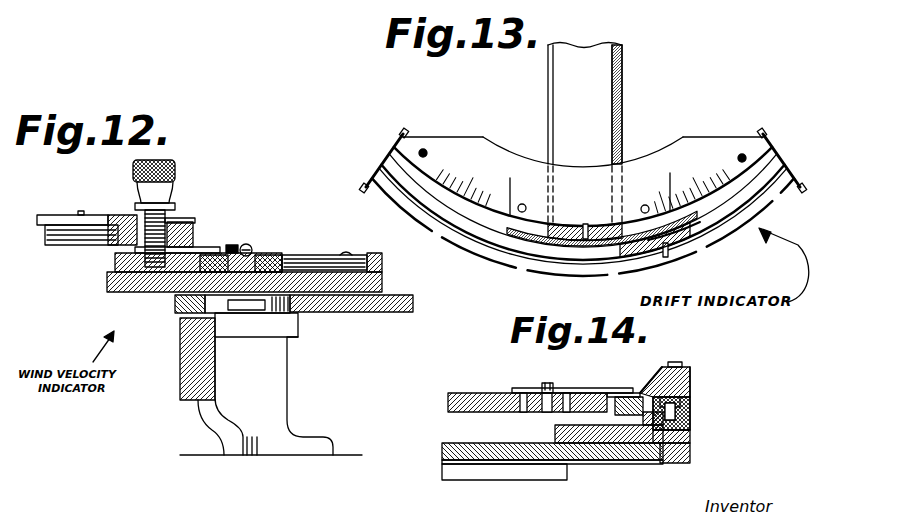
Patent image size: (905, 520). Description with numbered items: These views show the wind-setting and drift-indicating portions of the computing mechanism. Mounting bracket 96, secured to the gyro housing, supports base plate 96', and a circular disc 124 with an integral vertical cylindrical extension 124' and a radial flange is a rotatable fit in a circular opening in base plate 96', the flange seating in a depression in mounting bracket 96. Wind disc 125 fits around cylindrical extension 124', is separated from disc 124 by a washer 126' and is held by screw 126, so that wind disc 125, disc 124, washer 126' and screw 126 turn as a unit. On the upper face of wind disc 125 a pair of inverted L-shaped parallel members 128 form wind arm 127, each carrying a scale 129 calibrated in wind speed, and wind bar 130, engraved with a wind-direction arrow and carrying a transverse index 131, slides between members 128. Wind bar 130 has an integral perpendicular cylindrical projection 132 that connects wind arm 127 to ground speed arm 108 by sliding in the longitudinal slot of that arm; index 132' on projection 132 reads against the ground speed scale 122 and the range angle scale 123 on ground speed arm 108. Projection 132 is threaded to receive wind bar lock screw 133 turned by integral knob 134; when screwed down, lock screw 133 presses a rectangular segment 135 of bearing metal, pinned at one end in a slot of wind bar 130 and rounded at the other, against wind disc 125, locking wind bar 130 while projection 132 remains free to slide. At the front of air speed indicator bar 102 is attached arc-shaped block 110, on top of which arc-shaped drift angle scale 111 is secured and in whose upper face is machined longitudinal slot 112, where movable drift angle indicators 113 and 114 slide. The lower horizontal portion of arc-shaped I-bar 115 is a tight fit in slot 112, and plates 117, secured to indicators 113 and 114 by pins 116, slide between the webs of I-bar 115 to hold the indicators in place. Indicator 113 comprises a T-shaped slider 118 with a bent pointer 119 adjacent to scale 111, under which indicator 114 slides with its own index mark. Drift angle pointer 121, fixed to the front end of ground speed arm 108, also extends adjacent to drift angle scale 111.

In FIG. 12, the mounting bracket 96 is at (271, 396).
In FIG. 12, the base plate 96' is at (351, 318).
In FIG. 14, the base plate 96' is at (504, 486).
In FIG. 13, the air speed indicator bar 102 is at (592, 128).
In FIG. 14, the air speed indicator bar 102 is at (618, 450).
In FIG. 12, the ground speed arm 108 is at (47, 238).
In FIG. 14, the ground speed arm 108 is at (488, 393).
In FIG. 14, the arc-shaped block 110 is at (676, 463).
In FIG. 13, the drift angle scale 111 is at (460, 181).
In FIG. 14, the drift angle scale 111 is at (630, 396).
In FIG. 13, the longitudinal slot 112 is at (523, 257).
In FIG. 14, the longitudinal slot 112 is at (692, 420).
In FIG. 13, the movable drift angle indicator 113 is at (678, 248).
In FIG. 14, the movable drift angle indicator 113 is at (694, 367).
In FIG. 13, the movable drift angle indicator 114 is at (563, 223).
In FIG. 14, the movable drift angle indicator 114 is at (670, 368).
In FIG. 13, the arc-shaped I-bar 115 is at (667, 233).
In FIG. 14, the arc-shaped I-bar 115 is at (692, 440).
In FIG. 13, the pins 116 is at (586, 238).
In FIG. 14, the pins 116 is at (643, 410).
In FIG. 14, the plates 117 is at (692, 397).
In FIG. 14, the T-shaped slider 118 is at (693, 375).
In FIG. 14, the bent pointer 119 is at (651, 392).
In FIG. 14, the drift angle pointer 121 is at (596, 388).
In FIG. 12, the scale 122 is at (222, 252).
In FIG. 12, the range angle scale 123 is at (123, 214).
In FIG. 12, the circular disc 124 is at (255, 330).
In FIG. 12, the cylindrical extension 124' is at (251, 316).
In FIG. 12, the wind disc 125 is at (110, 292).
In FIG. 12, the screw 126 is at (176, 359).
In FIG. 12, the washer 126' is at (161, 309).
In FIG. 12, the wind arm 127 is at (313, 252).
In FIG. 12, the inverted L-shaped parallel members 128 is at (376, 263).
In FIG. 12, the scale 129 is at (352, 253).
In FIG. 12, the wind bar 130 is at (208, 254).
In FIG. 12, the index 131 is at (252, 252).
In FIG. 12, the cylindrical projection 132 is at (202, 220).
In FIG. 12, the index 132' is at (189, 200).
In FIG. 12, the wind bar lock screw 133 is at (133, 244).
In FIG. 12, the knob 134 is at (178, 163).
In FIG. 12, the rectangular segment of bearing metal 135 is at (112, 272).